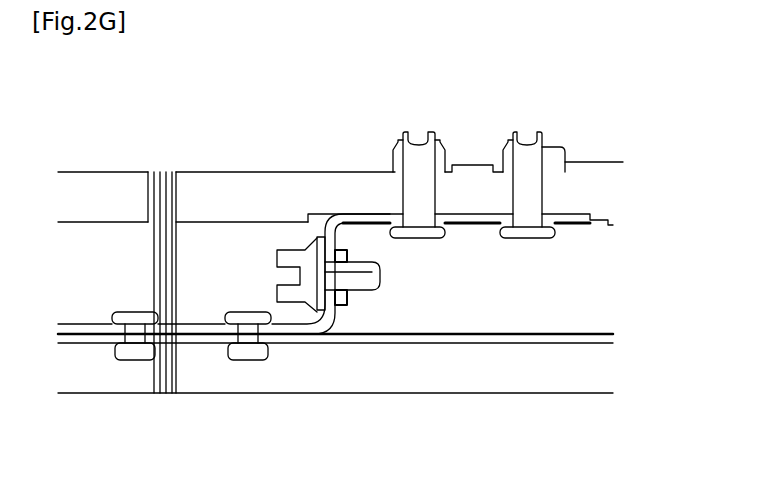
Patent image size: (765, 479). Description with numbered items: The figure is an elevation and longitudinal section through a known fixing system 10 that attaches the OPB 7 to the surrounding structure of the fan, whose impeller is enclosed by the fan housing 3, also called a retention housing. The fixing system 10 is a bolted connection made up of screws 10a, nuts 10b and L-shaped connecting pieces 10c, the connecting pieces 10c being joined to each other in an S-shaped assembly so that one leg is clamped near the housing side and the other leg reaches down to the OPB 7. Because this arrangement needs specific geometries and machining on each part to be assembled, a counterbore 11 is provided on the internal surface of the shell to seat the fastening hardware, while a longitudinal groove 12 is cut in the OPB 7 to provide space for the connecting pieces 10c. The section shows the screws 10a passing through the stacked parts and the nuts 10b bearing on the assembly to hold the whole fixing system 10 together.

The fan housing 3 is at (595, 178).
The OPB 7 is at (542, 372).
The fixing system 10 is at (411, 276).
The screw 10a is at (527, 240).
The nut 10b is at (555, 143).
The L-shaped connecting piece 10c is at (327, 230).
The counterbore 11 is at (603, 207).
The longitudinal groove 12 is at (395, 335).